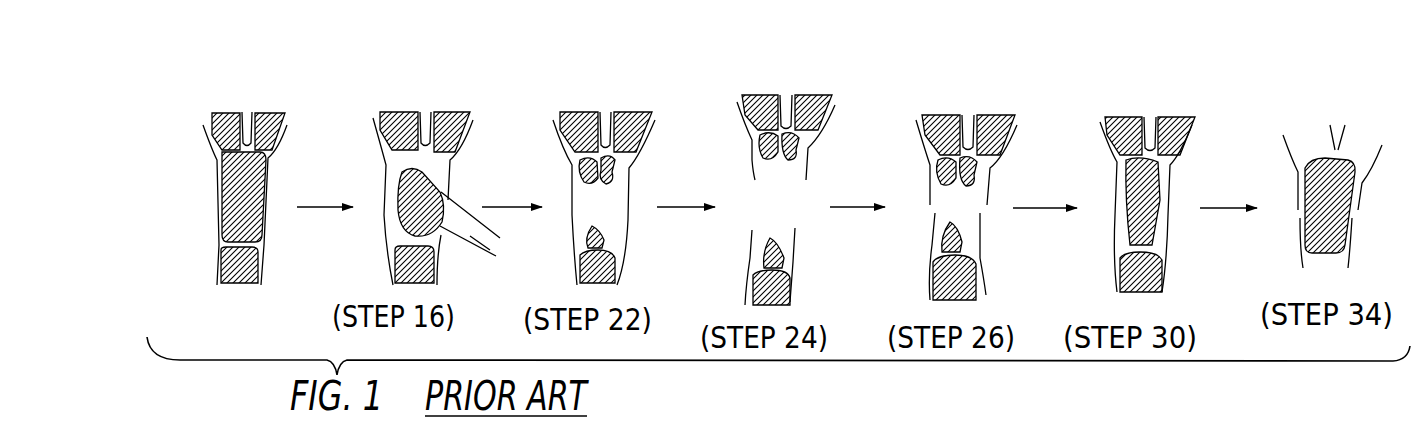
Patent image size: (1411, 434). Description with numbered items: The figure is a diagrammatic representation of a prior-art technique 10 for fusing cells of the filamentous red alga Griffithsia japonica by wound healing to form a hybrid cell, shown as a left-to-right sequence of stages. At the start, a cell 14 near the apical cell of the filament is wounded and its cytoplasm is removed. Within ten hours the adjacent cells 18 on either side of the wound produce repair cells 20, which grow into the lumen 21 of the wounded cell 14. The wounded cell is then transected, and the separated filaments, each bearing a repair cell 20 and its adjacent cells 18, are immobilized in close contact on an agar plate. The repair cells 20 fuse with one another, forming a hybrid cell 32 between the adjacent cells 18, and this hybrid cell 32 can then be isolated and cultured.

The technique 10 is at (254, 76).
The cell 14 is at (233, 210).
The adjacent cells 18 is at (575, 115).
The repair cells 20 is at (580, 168).
The lumen 21 is at (606, 210).
The hybrid cell 32 is at (1142, 226).